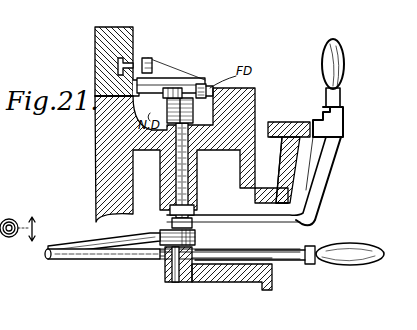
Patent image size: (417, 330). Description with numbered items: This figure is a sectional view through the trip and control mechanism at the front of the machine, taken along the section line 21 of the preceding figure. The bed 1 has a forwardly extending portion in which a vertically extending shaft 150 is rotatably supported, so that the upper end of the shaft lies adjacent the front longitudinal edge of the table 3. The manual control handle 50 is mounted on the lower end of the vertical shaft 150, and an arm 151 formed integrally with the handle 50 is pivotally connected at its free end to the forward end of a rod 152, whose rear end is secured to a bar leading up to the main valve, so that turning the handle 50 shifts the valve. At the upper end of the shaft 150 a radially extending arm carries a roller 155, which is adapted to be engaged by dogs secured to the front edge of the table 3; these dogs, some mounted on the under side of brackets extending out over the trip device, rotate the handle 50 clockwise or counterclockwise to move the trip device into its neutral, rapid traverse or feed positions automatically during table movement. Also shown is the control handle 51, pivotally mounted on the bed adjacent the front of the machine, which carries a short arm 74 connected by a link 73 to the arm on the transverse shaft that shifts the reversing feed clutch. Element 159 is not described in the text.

The bed 1 is at (100, 148).
The table 3 is at (118, 30).
The section line 21— 21 is at (36, 229).
The manual control handle 50 is at (308, 223).
The control handle 51 is at (288, 262).
The link 73 is at (117, 257).
The short arm 74 is at (173, 283).
The vertical shaft 150 is at (188, 190).
The arm 151 is at (198, 238).
The rod 152 is at (103, 245).
The roller 155 is at (169, 90).
The collar 159 is at (201, 86).